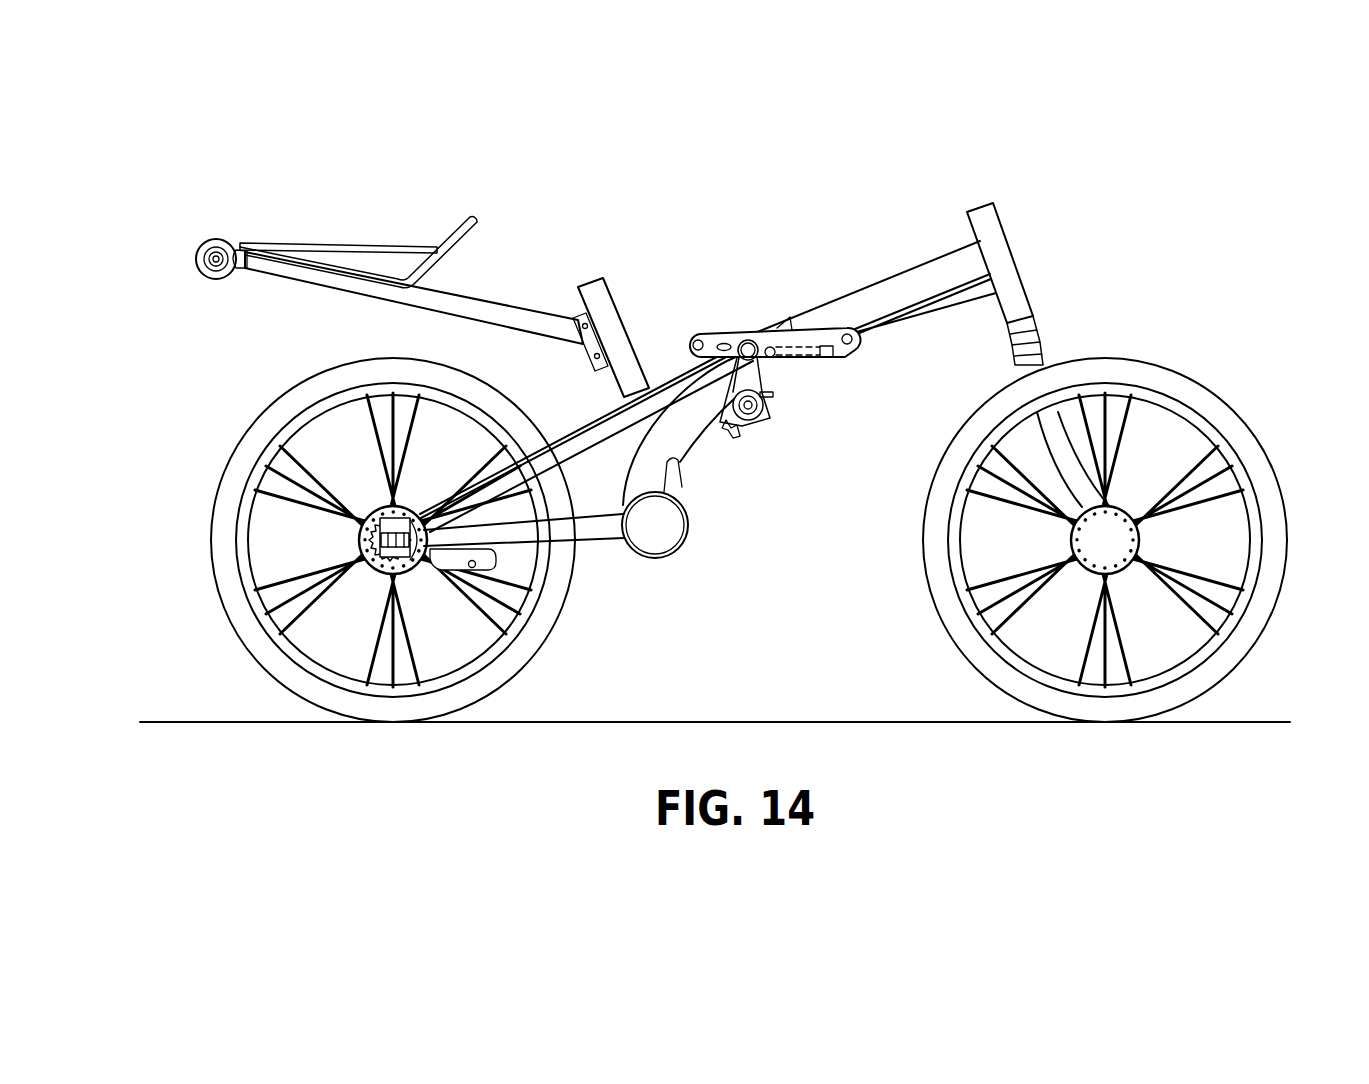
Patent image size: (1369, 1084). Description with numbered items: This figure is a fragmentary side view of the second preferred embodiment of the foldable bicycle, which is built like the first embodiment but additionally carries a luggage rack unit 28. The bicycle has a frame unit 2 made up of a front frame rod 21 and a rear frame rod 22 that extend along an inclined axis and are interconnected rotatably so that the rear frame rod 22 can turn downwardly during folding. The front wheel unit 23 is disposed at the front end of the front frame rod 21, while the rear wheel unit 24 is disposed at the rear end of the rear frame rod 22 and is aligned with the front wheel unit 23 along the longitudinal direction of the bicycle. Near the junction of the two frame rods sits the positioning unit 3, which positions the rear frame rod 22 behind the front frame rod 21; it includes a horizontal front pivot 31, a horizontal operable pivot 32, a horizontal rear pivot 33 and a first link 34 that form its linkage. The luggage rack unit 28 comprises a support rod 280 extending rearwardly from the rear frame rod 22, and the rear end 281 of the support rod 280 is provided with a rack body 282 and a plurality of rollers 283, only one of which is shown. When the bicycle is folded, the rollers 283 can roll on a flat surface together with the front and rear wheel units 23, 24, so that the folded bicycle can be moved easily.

The frame unit 2 is at (855, 272).
The front frame rod 21 is at (920, 265).
The rear frame rod 22 is at (660, 397).
The front wheel unit 23 is at (1257, 437).
The rear wheel unit 24 is at (210, 525).
The luggage rack unit 28 is at (510, 307).
The support rod 280 is at (470, 310).
The rear end 281 is at (245, 263).
The rack body 282 is at (335, 243).
The roller 283 is at (193, 262).
The positioning unit 3 is at (751, 312).
The horizontal front pivot 31 is at (768, 333).
The horizontal operable pivot 32 is at (828, 358).
The horizontal rear pivot 33 is at (747, 332).
The first link 34 is at (802, 350).